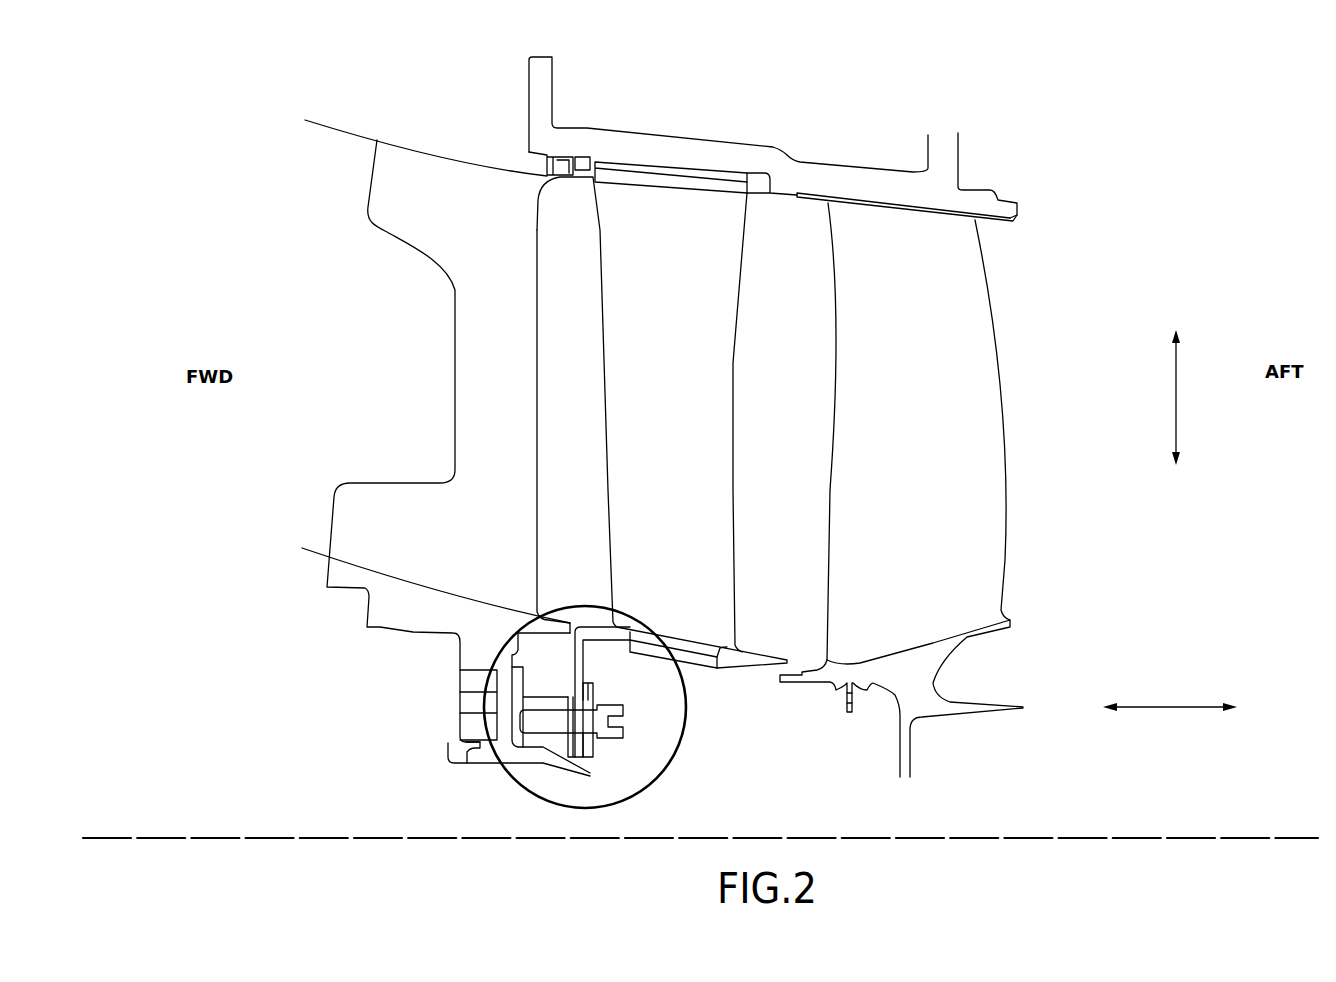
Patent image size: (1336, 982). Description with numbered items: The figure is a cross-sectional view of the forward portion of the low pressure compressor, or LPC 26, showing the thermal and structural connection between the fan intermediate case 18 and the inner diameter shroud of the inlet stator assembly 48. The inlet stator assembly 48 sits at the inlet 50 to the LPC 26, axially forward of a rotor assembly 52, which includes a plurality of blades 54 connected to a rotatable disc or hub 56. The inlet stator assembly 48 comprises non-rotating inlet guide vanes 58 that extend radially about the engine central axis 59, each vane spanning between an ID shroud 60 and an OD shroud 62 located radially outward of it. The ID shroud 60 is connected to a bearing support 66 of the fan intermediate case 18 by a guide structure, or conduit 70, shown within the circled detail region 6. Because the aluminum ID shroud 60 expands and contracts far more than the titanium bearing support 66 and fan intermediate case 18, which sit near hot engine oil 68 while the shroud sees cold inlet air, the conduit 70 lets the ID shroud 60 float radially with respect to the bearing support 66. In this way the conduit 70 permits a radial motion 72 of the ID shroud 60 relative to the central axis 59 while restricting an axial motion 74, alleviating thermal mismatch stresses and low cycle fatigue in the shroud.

The detail region 6 is at (682, 750).
The fan intermediate case 18 is at (453, 337).
The low pressure compressor 26 is at (822, 72).
The inlet stator assembly 48 is at (830, 290).
The inlet 50 is at (594, 300).
The rotor assembly 52 is at (1047, 290).
The blades 54 is at (987, 435).
The rotatable disc or hub 56 is at (963, 640).
The inlet guide vanes 58 is at (717, 480).
The engine central axis 59 is at (1077, 838).
The inner diameter shroud 60 is at (733, 657).
The outer diameter shroud 62 is at (680, 185).
The bearing support 66 is at (458, 760).
The engine oil 68 is at (520, 824).
The conduit 70 is at (615, 761).
The radial motion 72 is at (1176, 397).
The axial motion 74 is at (1170, 707).